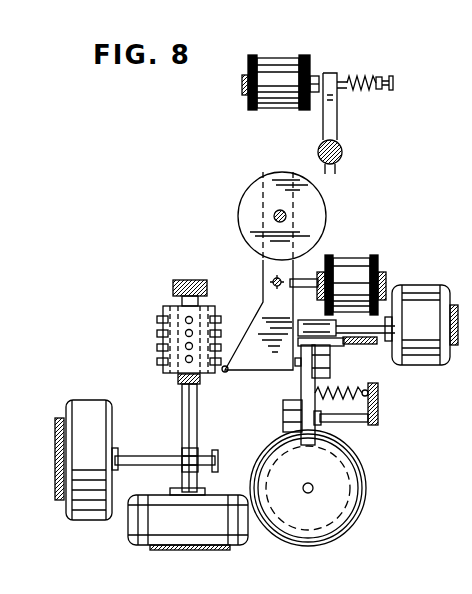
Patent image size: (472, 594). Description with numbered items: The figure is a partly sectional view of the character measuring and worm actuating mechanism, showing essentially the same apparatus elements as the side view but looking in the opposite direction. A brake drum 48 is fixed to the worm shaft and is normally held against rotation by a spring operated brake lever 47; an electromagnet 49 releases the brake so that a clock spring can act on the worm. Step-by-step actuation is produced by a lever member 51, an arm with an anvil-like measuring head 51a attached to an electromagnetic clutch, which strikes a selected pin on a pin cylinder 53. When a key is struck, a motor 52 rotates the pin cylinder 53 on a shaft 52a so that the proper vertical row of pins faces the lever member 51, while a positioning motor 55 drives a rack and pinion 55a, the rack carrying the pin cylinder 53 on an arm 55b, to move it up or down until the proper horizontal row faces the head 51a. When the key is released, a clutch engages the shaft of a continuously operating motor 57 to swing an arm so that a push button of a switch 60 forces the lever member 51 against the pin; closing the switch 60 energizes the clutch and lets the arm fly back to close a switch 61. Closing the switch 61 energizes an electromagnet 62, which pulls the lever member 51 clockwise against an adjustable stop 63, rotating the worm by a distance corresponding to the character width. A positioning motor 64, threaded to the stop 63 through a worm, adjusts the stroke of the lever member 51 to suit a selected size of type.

The brake lever 47 is at (337, 130).
The brake drum 48 is at (246, 198).
The electromagnet 49 is at (269, 62).
The lever member 51 is at (262, 295).
The head of the member 51a is at (226, 373).
The motor 52 is at (135, 546).
The shaft 52a is at (198, 421).
The pin cylinder 53 is at (166, 310).
The positioning motor 55 is at (98, 402).
The rack and pinion 55a is at (184, 455).
The arm 55b is at (177, 386).
The motor 57 is at (356, 484).
The switch 60 is at (325, 361).
The switch 61 is at (284, 413).
The electromagnet 62 is at (350, 258).
The adjustable stop 63 is at (302, 321).
The positioning motor 64 is at (428, 287).